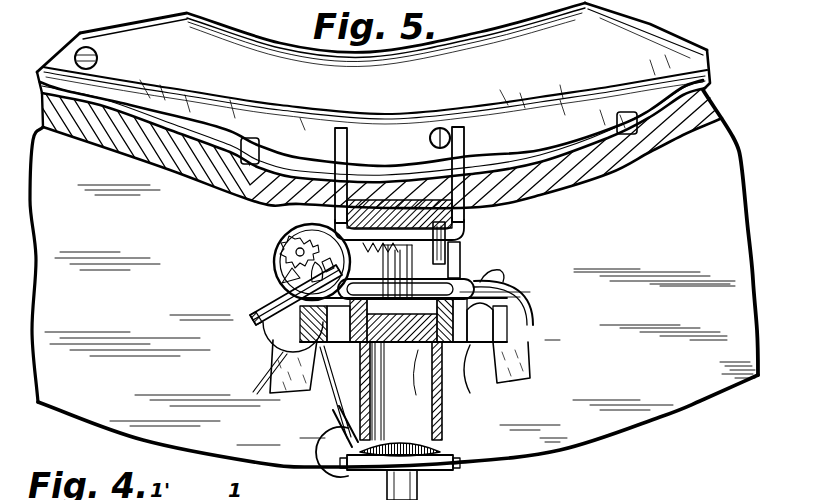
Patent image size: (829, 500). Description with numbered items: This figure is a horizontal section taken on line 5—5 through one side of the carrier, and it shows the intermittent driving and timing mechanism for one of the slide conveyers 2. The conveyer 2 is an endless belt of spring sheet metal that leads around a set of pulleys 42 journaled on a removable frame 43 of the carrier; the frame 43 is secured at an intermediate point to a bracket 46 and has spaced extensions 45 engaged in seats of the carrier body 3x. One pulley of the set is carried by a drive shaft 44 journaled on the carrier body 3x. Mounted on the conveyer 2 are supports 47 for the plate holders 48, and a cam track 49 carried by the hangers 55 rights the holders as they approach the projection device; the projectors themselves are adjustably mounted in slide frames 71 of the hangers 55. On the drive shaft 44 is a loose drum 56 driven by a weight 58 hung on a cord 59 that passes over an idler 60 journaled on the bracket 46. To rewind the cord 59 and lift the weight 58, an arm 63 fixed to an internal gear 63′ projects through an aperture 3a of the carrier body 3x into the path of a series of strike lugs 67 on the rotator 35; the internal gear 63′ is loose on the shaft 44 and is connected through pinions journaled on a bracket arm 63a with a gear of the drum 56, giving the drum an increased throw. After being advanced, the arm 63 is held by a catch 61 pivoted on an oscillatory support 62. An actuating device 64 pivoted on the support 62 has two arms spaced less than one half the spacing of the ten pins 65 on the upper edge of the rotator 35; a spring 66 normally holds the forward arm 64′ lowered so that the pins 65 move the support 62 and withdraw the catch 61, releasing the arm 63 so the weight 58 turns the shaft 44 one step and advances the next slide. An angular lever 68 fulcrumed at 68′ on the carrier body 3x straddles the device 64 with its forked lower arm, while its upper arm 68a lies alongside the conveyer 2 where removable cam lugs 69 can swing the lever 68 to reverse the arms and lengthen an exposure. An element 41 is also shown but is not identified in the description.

The conveyer 2 is at (257, 373).
The actuating device 64 is at (392, 126).
The aperture of carrier body 3a is at (313, 170).
The carrier body 3x is at (648, 165).
The pins 65 is at (100, 55).
The strike lugs 67 is at (263, 138).
The rotator 35 is at (680, 54).
The forward arm of actuating device 64′ is at (348, 150).
The catch 61 is at (343, 207).
The oscillatory support 62 is at (390, 222).
The arm 63 is at (400, 170).
The angular lever 68 is at (447, 232).
The upper arm of angular lever 68a is at (463, 258).
The spring 66 is at (406, 280).
The pulleys 42 is at (270, 340).
The plate holders 48 is at (373, 392).
The cam lugs 69 is at (401, 391).
The brackets 46 is at (419, 486).
The idler 60 is at (330, 417).
The flexible connection or cord 59 is at (343, 407).
The weight 58 is at (333, 447).
The slide frames 71 is at (467, 350).
The drive shaft 44 is at (296, 295).
The lever end 41 is at (265, 300).
The supports 47 is at (247, 313).
The bracket arm of carrier body 63a is at (277, 236).
The internal gear 63′ is at (280, 272).
The loose drum 56 is at (336, 266).
The frames 43 is at (275, 393).
The fulcrum of angular lever 68′ is at (512, 278).
The spaced extensions 45 is at (540, 287).
The cam track or guide 49 is at (535, 313).
The hangers 55 is at (530, 345).
The section line 5— 5 is at (697, 418).